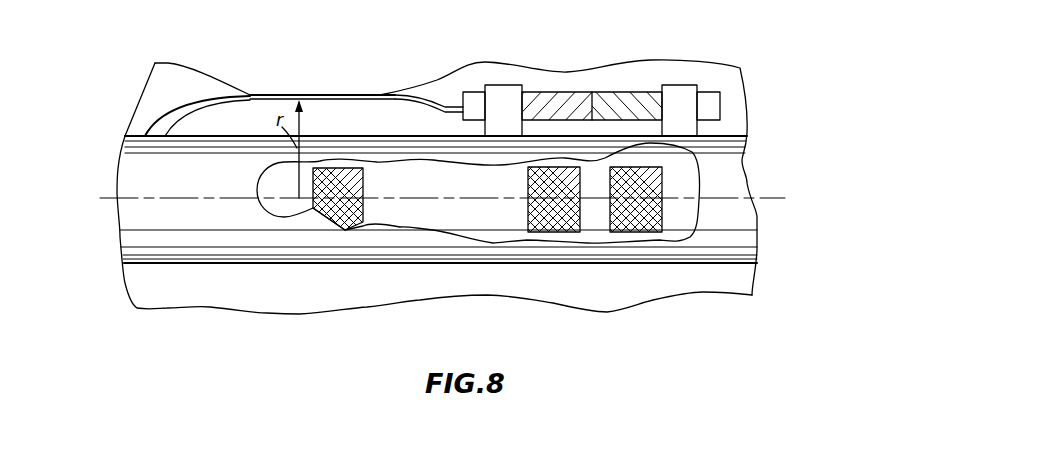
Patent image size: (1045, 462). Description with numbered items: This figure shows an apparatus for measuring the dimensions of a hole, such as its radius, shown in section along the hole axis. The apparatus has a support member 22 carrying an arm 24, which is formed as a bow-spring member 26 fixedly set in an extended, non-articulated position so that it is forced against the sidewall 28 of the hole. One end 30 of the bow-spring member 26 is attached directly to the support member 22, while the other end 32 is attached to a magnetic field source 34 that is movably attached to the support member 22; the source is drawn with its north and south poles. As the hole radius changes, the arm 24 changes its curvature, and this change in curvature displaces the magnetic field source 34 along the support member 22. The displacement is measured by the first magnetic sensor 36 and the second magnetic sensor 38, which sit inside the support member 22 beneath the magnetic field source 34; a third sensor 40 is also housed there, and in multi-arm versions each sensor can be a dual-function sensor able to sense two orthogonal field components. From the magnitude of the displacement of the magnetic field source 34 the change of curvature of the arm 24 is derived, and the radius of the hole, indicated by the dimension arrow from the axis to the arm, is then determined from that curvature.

The support member 22 is at (188, 237).
The arm 24 is at (318, 94).
The bow-spring member 26 is at (195, 94).
The sidewall 28 is at (488, 56).
The one end of bow-spring member 30 is at (143, 130).
The other end of bow-spring member 32 is at (440, 100).
The magnetic field source 34 is at (621, 93).
The first magnetic sensor 36 is at (636, 223).
The second magnetic sensor 38 is at (553, 223).
The third sensor 40 is at (338, 222).